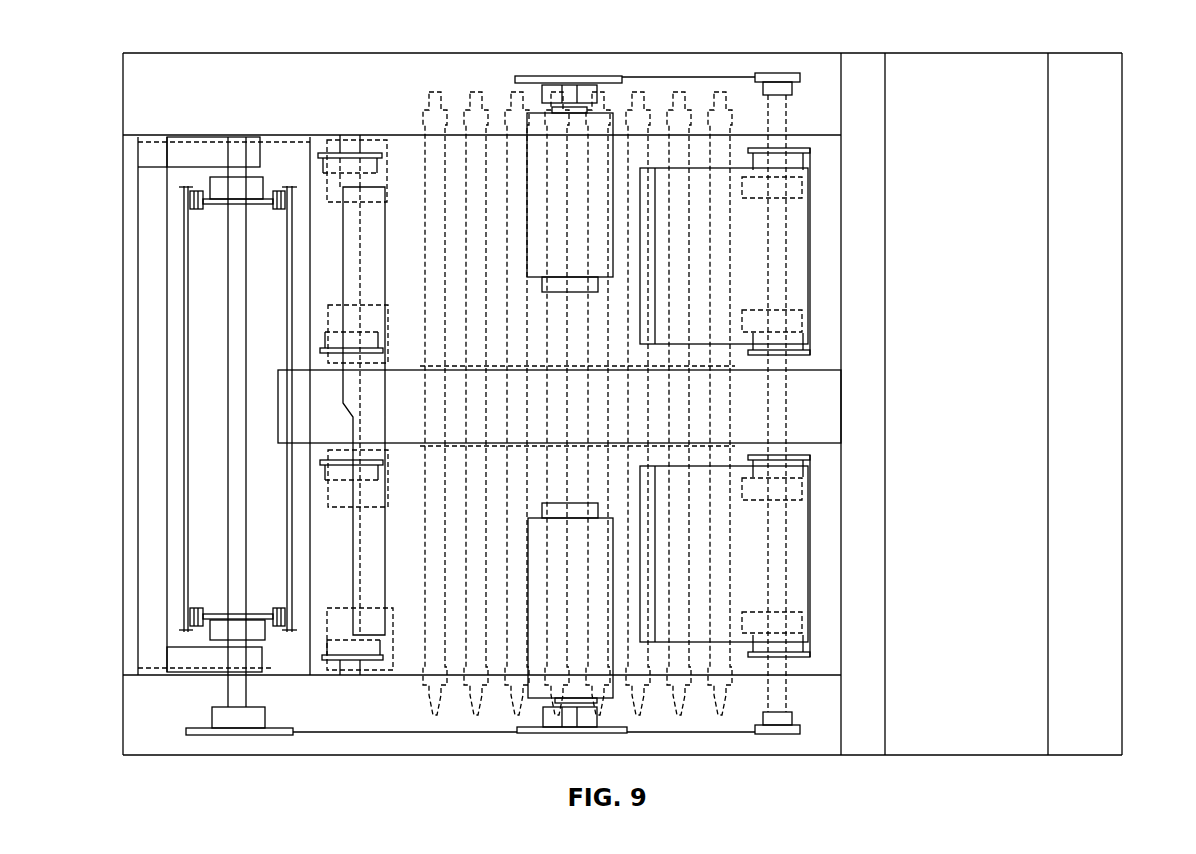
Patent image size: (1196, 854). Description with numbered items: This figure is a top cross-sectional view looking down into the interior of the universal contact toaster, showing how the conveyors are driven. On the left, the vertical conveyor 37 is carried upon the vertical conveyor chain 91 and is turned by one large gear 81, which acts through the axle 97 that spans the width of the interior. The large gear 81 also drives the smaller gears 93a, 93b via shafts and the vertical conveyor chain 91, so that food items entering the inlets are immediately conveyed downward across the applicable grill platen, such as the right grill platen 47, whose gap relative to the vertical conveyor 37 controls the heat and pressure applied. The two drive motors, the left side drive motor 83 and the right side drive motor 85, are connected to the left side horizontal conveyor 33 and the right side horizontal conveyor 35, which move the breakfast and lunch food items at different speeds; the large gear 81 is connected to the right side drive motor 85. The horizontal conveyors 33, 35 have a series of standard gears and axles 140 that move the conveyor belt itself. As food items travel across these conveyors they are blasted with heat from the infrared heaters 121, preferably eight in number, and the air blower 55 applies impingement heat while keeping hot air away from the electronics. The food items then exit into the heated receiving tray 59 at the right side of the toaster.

The left side horizontal conveyor 33 is at (825, 280).
The right side horizontal conveyor 35 is at (811, 545).
The vertical conveyor 37 is at (183, 408).
The right grill platen 47 is at (384, 207).
The air blower 55 is at (726, 163).
The receiving tray 59 is at (1122, 325).
The large gear 81 is at (187, 732).
The left side drive motor 83 is at (613, 112).
The right side drive motor 85 is at (613, 700).
The vertical conveyor chain 91 is at (190, 188).
The smaller gear 93a is at (188, 618).
The smaller gear 93b is at (197, 197).
The axle 97 is at (207, 507).
The infrared heater 121 is at (470, 112).
The gears and axles 140 is at (568, 76).